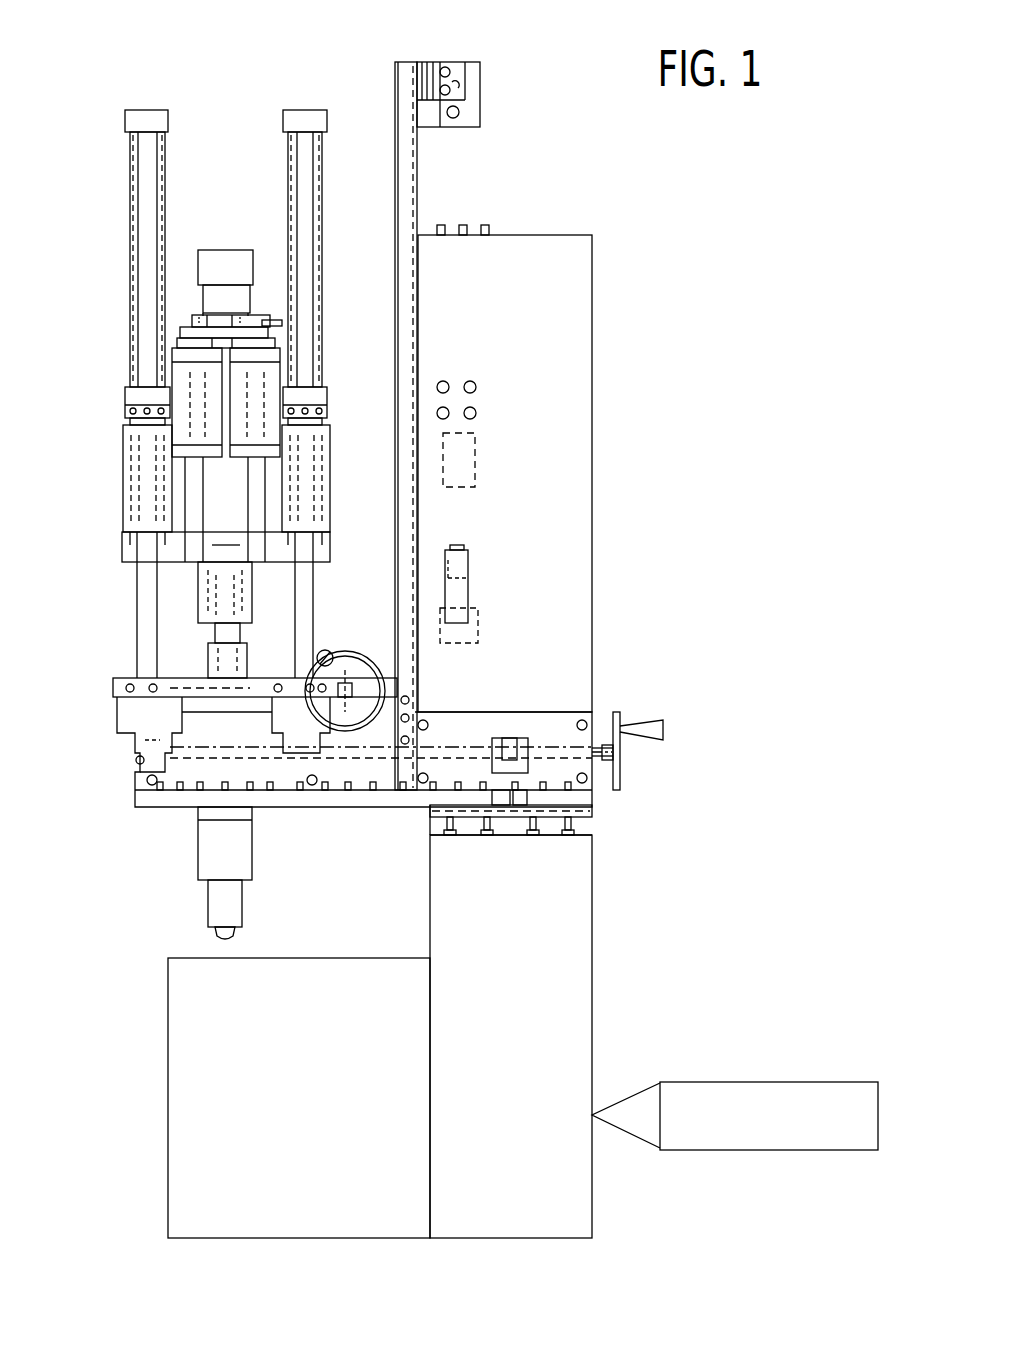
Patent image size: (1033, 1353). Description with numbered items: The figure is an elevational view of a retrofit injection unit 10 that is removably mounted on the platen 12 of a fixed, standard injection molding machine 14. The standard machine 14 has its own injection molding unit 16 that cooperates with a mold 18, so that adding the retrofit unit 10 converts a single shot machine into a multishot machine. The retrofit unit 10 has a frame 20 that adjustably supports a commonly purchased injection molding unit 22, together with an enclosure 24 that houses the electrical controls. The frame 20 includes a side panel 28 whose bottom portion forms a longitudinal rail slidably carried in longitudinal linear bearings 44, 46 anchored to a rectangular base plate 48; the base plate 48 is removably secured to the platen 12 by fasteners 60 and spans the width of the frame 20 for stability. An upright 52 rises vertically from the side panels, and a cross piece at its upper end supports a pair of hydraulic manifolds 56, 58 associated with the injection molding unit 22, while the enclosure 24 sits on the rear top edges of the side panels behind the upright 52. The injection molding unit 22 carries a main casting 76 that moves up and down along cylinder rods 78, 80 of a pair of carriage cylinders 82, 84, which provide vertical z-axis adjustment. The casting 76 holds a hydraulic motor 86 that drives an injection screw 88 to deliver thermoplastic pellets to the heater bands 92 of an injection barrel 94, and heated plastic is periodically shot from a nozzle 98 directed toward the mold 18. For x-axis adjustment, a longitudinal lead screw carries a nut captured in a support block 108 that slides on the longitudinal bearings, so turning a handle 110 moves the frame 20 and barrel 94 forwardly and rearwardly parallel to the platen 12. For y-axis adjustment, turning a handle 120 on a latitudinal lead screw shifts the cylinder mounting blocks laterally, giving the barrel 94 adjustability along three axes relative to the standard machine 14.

The retrofit injection unit 10 is at (361, 100).
The platen 12 is at (552, 843).
The injection molding machine 14 is at (590, 960).
The injection molding unit 16 is at (793, 1078).
The mold 18 is at (168, 1088).
The frame 20 is at (118, 774).
The injection molding unit 22 is at (105, 443).
The enclosure 24 is at (570, 337).
The side panel 28 is at (500, 722).
The longitudinal linear bearing 44 is at (590, 801).
The longitudinal linear bearing 46 is at (425, 806).
The base plate 48 is at (588, 823).
The upright 52 is at (412, 170).
The hydraulic manifold 56 is at (478, 92).
The hydraulic manifold 58 is at (443, 66).
The fasteners 60 is at (452, 838).
The main casting 76 is at (122, 543).
The cylinder rod 78 is at (305, 580).
The cylinder rod 80 is at (145, 616).
The carriage cylinder 82 is at (130, 170).
The carriage cylinder 84 is at (288, 166).
The hydraulic motor 86 is at (226, 250).
The injection screw 88 is at (213, 491).
The heater bands 92 is at (238, 857).
The injection barrel 94 is at (233, 905).
The nozzle 98 is at (228, 940).
The support block 108 is at (465, 745).
The handle 110 is at (663, 730).
The handle 120 is at (338, 660).